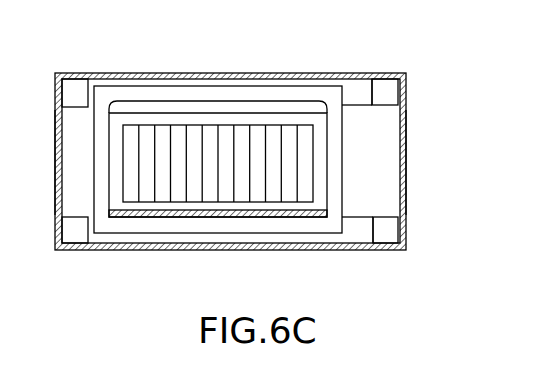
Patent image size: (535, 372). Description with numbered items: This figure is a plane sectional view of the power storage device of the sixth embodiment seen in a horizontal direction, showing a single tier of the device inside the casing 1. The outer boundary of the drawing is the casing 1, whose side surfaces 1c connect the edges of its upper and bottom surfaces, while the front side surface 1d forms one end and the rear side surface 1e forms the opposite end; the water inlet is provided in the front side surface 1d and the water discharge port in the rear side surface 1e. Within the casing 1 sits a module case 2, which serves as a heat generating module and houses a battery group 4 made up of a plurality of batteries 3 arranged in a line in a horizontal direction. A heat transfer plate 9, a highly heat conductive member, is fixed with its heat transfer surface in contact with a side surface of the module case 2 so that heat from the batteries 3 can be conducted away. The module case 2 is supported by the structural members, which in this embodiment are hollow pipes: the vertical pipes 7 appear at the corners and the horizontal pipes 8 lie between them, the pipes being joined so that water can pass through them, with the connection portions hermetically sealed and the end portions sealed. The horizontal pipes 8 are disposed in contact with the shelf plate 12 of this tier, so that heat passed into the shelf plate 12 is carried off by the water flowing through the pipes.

The casing 1 is at (170, 73).
The side surface 1c is at (362, 88).
The front side surface 1d is at (55, 153).
The rear side surface 1e is at (404, 153).
The module case 2 is at (327, 120).
The battery 3 is at (273, 167).
The battery group 4 is at (222, 101).
The vertical pipe 7 is at (72, 89).
The horizontal pipe 8 is at (372, 90).
The heat transfer plate 9 is at (289, 218).
The shelf plate 12 is at (186, 229).